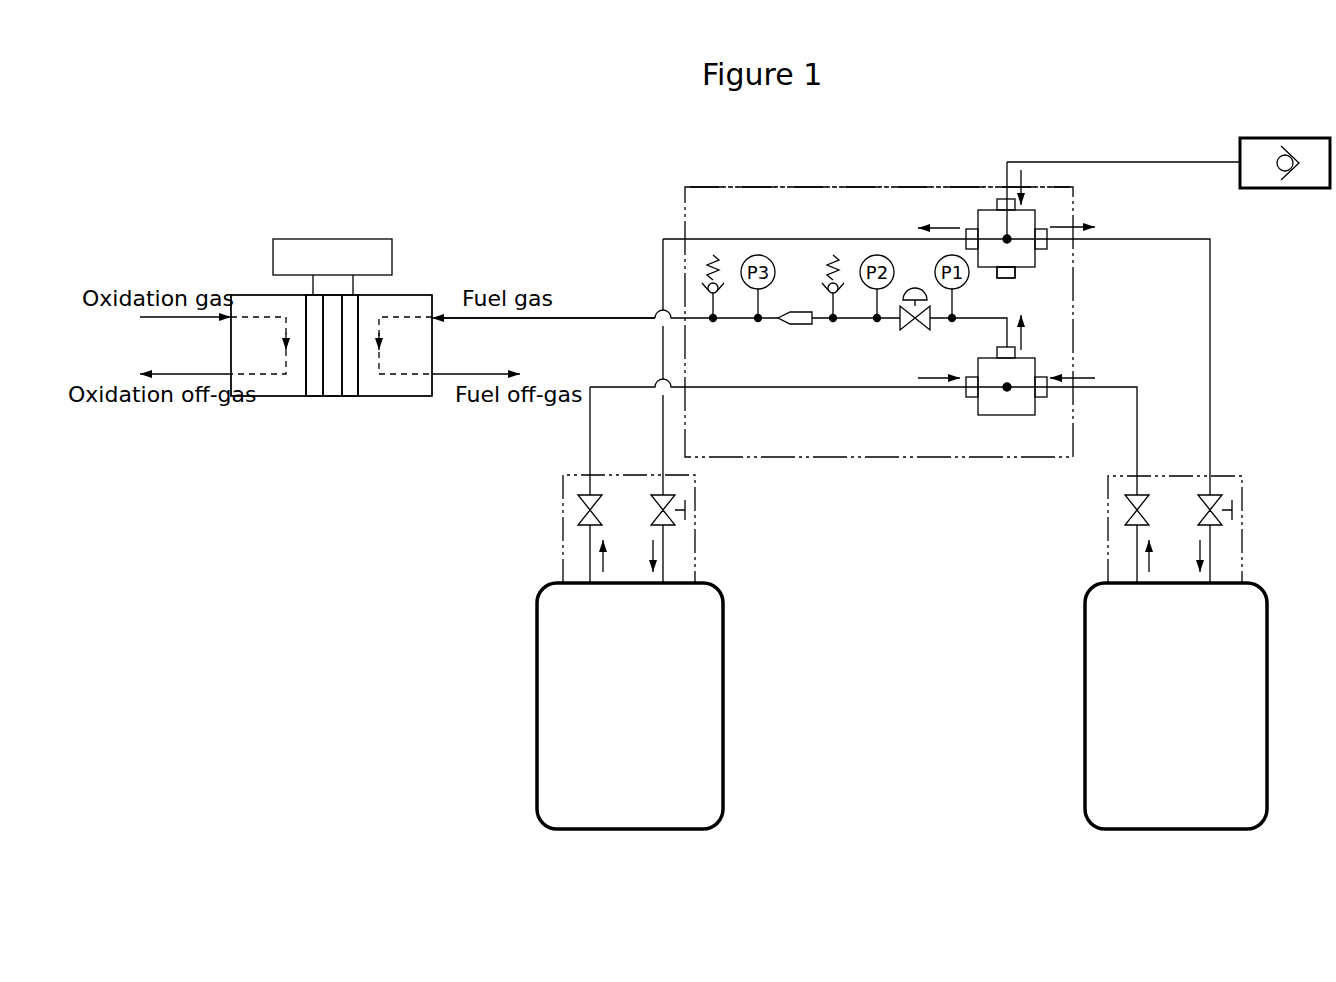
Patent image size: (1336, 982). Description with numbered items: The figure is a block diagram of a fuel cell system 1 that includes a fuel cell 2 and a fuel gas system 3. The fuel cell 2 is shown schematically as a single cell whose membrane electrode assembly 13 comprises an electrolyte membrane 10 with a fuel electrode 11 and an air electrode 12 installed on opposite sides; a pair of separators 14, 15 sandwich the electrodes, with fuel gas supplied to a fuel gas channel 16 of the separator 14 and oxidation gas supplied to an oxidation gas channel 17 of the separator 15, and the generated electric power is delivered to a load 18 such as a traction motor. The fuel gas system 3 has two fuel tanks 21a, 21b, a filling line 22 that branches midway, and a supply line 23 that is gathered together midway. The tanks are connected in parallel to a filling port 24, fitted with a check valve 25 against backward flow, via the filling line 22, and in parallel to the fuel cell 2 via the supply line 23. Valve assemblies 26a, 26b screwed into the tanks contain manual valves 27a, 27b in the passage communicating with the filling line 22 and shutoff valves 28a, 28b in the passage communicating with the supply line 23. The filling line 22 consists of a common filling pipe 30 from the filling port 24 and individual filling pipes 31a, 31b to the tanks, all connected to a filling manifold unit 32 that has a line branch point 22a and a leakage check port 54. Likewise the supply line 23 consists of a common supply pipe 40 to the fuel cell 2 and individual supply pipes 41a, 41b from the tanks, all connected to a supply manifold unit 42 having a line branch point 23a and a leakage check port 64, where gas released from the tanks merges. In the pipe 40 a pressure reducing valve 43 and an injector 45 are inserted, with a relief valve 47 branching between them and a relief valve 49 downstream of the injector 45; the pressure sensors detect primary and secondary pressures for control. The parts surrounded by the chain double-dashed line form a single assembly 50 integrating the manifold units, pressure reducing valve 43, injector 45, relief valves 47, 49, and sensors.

The fuel cell system 1 is at (432, 200).
The fuel cell 2 is at (397, 293).
The fuel gas system 3 is at (559, 298).
The electrolyte membrane 10 is at (330, 387).
The fuel electrode 11 is at (350, 387).
The air electrode 12 is at (315, 387).
The membrane electrode assembly 13 is at (278, 447).
The separator 14 is at (418, 387).
The separator 15 is at (255, 387).
The fuel gas channel 16 is at (400, 312).
The oxidation gas channel 17 is at (262, 315).
The load 18 is at (350, 239).
The fuel tank 21a is at (640, 820).
The fuel tank 21b is at (1190, 820).
The filling line 22 is at (1143, 159).
The line branch point 22a is at (1005, 237).
The supply line 23 is at (580, 310).
The line branch point 23a is at (1005, 389).
The filling port 24 is at (1272, 137).
The check valve 25 is at (1292, 188).
The valve assembly 26a is at (560, 492).
The valve assembly 26b is at (1242, 482).
The manual valve 27a is at (657, 497).
The manual valve 27b is at (1205, 503).
The shutoff valve 28a is at (600, 511).
The shutoff valve 28b is at (1128, 508).
The common filling pipe 30 is at (1065, 160).
The individual filling pipe 31a is at (860, 238).
The individual filling pipe 31b is at (1138, 238).
The filling manifold unit 32 is at (1028, 265).
The common supply pipe 40 is at (610, 318).
The individual supply pipe 41a is at (632, 387).
The individual supply pipe 41b is at (1137, 387).
The supply manifold unit 42 is at (1025, 418).
The pressure reducing valve 43 is at (920, 330).
The injector 45 is at (795, 328).
The relief valve 47 is at (833, 255).
The relief valve 49 is at (713, 255).
The assembly 50 is at (985, 187).
The leakage check port 54 is at (1000, 280).
The leakage check port 64 is at (996, 417).